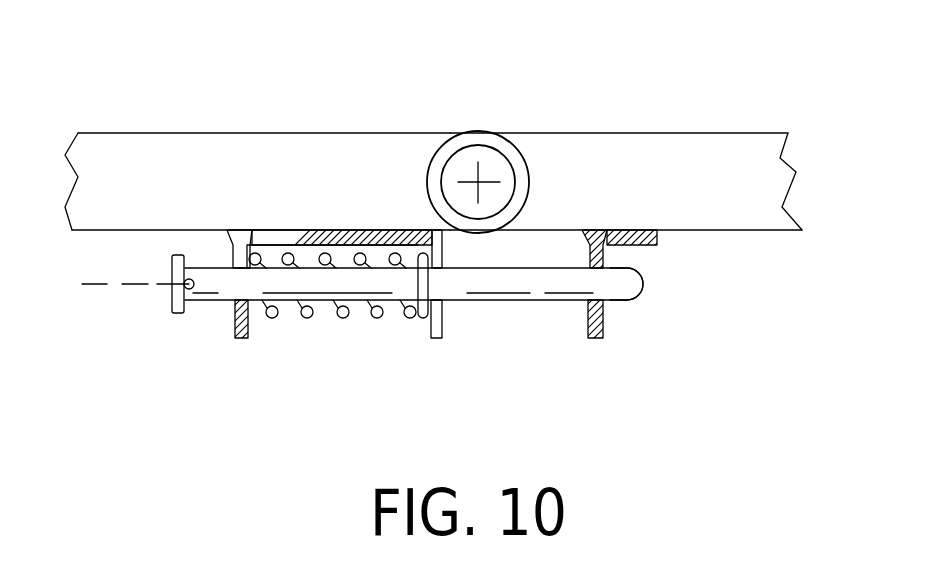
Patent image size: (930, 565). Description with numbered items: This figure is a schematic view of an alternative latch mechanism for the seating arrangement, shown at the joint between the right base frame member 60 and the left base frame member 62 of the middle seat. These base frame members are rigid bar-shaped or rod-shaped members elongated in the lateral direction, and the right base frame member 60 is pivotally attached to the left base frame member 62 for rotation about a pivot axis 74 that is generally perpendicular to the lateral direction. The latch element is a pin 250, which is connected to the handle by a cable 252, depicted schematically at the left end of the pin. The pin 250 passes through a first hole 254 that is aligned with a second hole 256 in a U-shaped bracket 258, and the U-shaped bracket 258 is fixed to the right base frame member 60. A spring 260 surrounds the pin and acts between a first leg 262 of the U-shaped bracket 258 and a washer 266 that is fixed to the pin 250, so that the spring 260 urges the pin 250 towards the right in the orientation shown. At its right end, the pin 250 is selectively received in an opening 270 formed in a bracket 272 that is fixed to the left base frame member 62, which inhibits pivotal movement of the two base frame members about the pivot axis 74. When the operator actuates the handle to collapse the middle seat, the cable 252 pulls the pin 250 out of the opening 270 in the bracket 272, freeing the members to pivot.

The right base frame member 60 is at (252, 126).
The left base frame member 62 is at (645, 124).
The pivot axis 74 is at (478, 182).
The pin 250 is at (530, 292).
The cable 252 is at (98, 285).
The first hole 254 is at (244, 302).
The second hole 256 is at (440, 300).
The U-shaped bracket 258 is at (300, 237).
The spring 260 is at (345, 320).
The first leg 262 is at (244, 338).
The washer 266 is at (424, 318).
The opening 270 is at (600, 300).
The bracket 272 is at (635, 235).